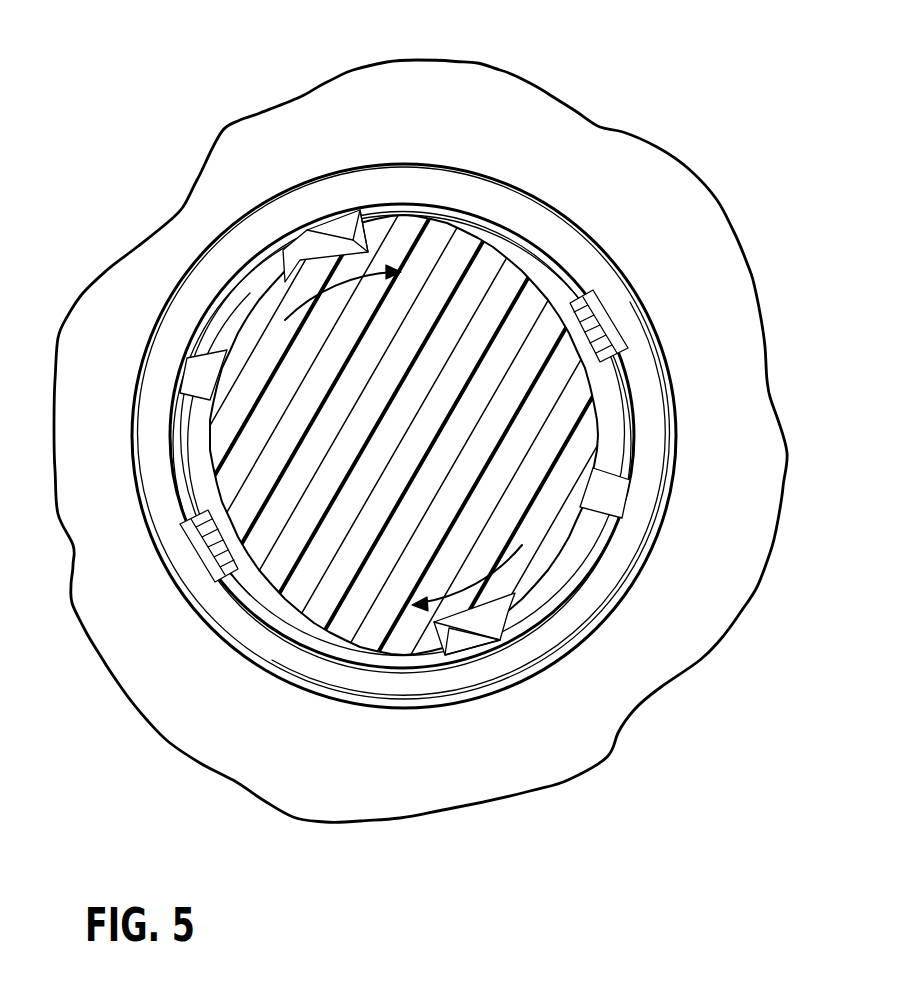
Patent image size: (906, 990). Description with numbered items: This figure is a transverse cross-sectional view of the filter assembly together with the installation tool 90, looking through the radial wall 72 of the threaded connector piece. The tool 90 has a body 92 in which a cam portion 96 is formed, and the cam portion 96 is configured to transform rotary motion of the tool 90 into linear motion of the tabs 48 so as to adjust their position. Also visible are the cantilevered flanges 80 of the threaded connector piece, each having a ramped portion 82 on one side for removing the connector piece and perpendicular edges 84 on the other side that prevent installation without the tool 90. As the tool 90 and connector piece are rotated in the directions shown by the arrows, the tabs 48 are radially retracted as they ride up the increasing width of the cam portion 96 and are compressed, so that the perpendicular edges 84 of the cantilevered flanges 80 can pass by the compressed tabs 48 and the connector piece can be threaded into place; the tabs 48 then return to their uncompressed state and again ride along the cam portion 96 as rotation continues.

The radial wall 72 is at (687, 617).
The tool 90 is at (515, 250).
The cam portion 96 is at (507, 236).
The tabs 48 is at (615, 312).
The body 92 is at (231, 348).
The cantilevered flanges 80 is at (282, 270).
The ramped portion 82 is at (286, 278).
The perpendicular edges 84 is at (358, 226).